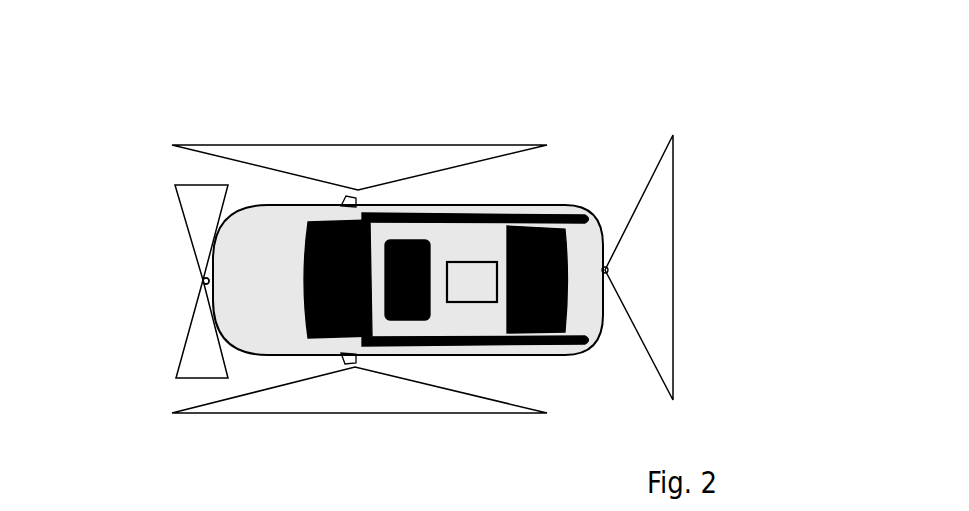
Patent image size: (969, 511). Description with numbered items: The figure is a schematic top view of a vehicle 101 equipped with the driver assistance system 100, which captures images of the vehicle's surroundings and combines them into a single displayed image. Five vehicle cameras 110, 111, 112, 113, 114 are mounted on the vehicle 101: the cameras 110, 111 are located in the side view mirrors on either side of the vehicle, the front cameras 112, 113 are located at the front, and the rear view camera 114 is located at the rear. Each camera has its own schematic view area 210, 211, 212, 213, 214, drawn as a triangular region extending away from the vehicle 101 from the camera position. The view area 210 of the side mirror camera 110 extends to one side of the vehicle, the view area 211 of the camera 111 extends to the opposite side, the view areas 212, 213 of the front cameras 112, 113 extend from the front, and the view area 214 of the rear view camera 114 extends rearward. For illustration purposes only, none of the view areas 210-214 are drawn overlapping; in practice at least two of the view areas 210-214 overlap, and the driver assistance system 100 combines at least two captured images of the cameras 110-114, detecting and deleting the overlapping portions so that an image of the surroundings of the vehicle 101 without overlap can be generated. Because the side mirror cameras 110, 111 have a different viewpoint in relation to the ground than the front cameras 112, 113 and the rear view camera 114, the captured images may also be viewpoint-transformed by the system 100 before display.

The driver assistance system 100 is at (487, 302).
The vehicle 101 is at (542, 220).
The camera 110 is at (360, 192).
The camera 111 is at (353, 367).
The front camera 112 is at (203, 282).
The front camera 113 is at (143, 321).
The rear view camera 114 is at (607, 273).
The view area 210 is at (228, 152).
The view area 211 is at (247, 405).
The view area 212 is at (190, 200).
The view area 213 is at (208, 372).
The view area 214 is at (667, 200).